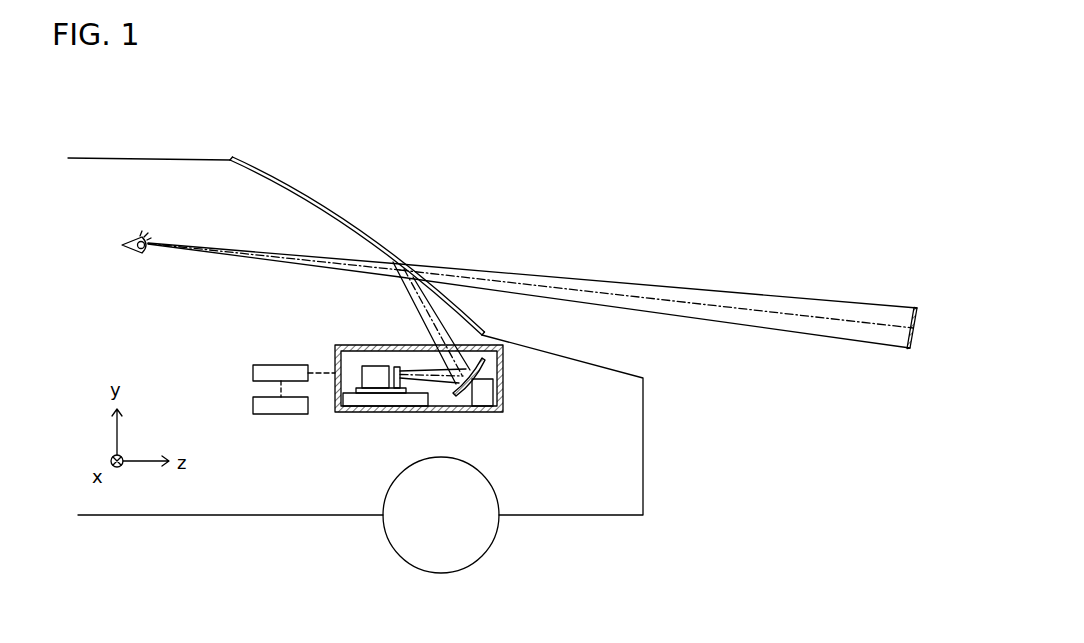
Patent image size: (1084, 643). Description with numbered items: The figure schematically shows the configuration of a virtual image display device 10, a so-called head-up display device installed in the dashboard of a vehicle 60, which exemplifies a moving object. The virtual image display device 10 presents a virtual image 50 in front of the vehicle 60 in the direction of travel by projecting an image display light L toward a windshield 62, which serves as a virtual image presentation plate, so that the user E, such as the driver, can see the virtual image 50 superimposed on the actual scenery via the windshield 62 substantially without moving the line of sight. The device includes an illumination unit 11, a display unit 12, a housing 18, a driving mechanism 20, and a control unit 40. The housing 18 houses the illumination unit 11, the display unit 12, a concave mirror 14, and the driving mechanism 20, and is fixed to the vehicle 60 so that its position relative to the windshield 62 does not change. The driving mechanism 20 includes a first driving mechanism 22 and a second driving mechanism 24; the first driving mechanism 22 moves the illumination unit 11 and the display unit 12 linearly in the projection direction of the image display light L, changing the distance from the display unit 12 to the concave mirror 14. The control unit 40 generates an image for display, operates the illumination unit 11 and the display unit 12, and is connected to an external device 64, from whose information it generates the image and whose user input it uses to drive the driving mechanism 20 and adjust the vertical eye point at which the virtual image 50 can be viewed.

The virtual image display device 10 is at (379, 390).
The illumination unit 11 is at (373, 365).
The display unit 12 is at (397, 367).
The concave mirror 14 is at (505, 365).
The housing 18 is at (505, 400).
The driving mechanism 20 is at (435, 390).
The first driving mechanism 22 is at (390, 400).
The second driving mechanism 24 is at (481, 400).
The control unit 40 is at (253, 372).
The virtual image 50 is at (920, 284).
The vehicle 60 is at (355, 326).
The windshield 62 is at (334, 214).
The external device 64 is at (253, 404).
The user E is at (134, 233).
The image display light L is at (437, 383).